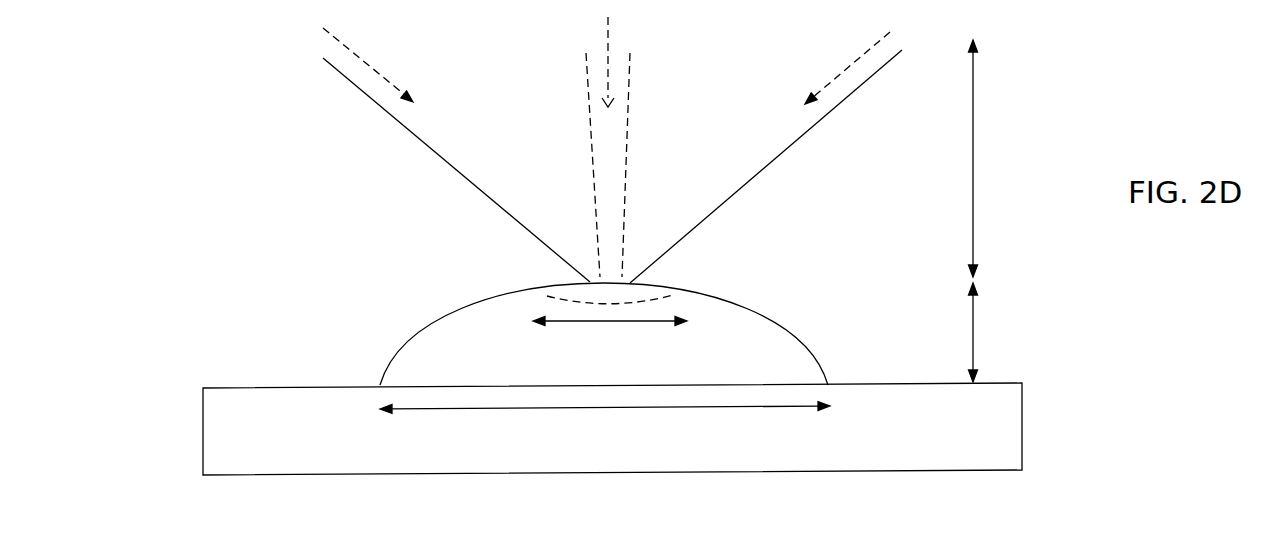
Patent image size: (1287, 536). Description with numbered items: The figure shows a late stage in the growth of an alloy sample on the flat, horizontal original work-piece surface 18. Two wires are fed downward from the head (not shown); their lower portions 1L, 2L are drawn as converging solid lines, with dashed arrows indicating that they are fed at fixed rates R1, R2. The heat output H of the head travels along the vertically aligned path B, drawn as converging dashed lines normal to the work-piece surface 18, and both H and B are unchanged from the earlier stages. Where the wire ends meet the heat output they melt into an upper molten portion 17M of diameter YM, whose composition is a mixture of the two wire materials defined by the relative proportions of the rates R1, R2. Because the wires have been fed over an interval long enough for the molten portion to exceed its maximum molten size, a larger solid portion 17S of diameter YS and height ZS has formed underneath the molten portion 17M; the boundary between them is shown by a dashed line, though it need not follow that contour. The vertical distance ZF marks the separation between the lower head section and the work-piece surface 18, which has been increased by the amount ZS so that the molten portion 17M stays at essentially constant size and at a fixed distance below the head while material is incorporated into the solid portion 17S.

The work-piece surface 18 is at (238, 388).
The solid portion 17S is at (730, 302).
The molten portion 17M is at (563, 283).
The lower portion of wire 1 1L is at (400, 127).
The lower portion of wire 2 2L is at (790, 145).
The feed rate of wire 1 R1 is at (388, 69).
The feed rate of wire 2 R2 is at (824, 80).
The path of the heat output B is at (618, 117).
The heat output H is at (592, 60).
The vertical distance from lower head section to work-piece surface ZF is at (991, 158).
The height of solid portion ZS is at (992, 332).
The diameter of molten portion YM is at (610, 347).
The diameter of solid portion YS is at (605, 436).